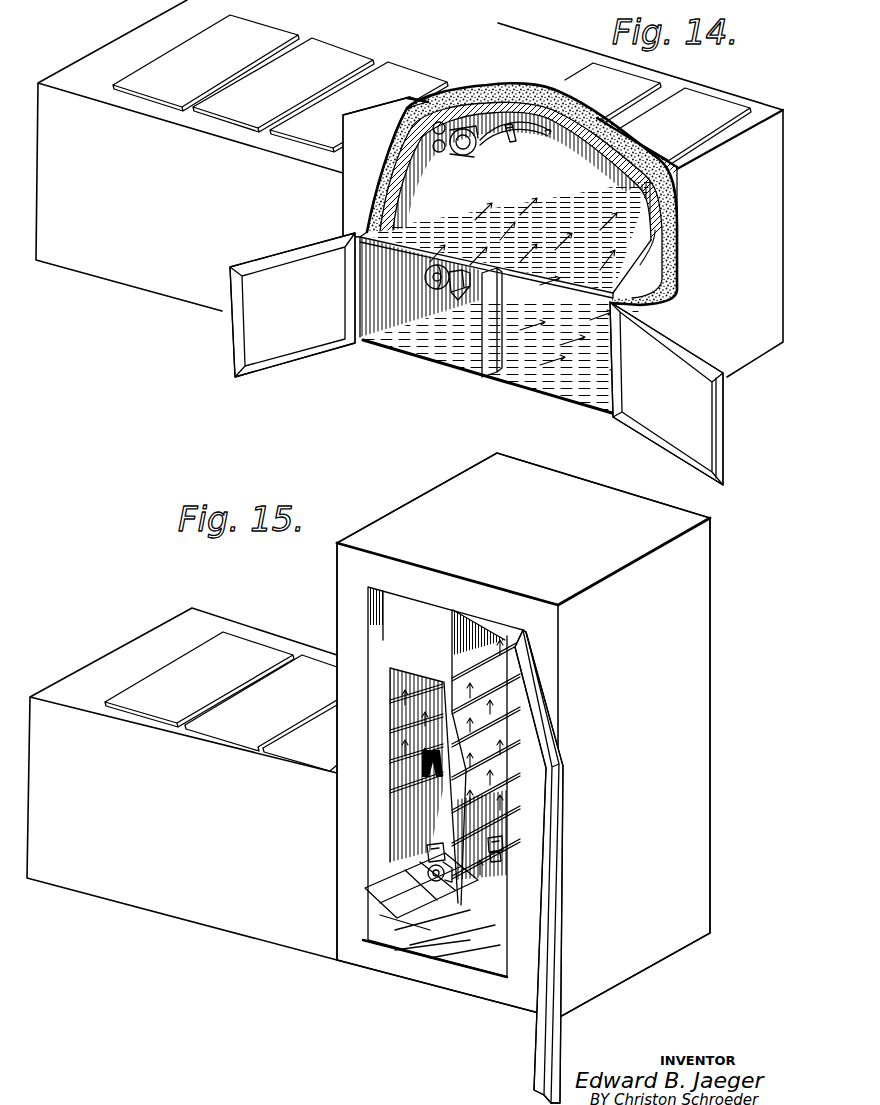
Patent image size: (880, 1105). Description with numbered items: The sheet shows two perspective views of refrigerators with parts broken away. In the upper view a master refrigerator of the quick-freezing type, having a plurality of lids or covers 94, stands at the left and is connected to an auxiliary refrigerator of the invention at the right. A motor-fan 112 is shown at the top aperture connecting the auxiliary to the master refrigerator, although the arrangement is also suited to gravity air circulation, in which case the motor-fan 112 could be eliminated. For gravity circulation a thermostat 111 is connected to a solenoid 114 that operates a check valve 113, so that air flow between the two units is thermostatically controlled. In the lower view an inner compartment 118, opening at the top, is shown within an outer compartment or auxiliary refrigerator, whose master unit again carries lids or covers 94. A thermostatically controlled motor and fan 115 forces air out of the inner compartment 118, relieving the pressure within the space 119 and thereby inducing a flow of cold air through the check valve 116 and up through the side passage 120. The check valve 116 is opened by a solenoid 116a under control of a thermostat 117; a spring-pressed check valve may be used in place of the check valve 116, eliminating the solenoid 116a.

In FIG. 14, the lids or covers 94 is at (205, 73).
In FIG. 15, the lids or covers 94 is at (189, 695).
In FIG. 14, the thermostat 111 is at (536, 139).
In FIG. 14, the motor-fan 112 is at (477, 120).
In FIG. 14, the check valve 113 is at (437, 290).
In FIG. 14, the solenoid 114 is at (456, 286).
In FIG. 15, the motor and fan 115 is at (398, 767).
In FIG. 15, the check valve 116 is at (427, 857).
In FIG. 15, the solenoid 116a is at (440, 890).
In FIG. 15, the thermostat 117 is at (503, 847).
In FIG. 15, the inner compartment 118 is at (397, 670).
In FIG. 15, the space 119 is at (523, 630).
In FIG. 15, the side passage 120 is at (487, 770).